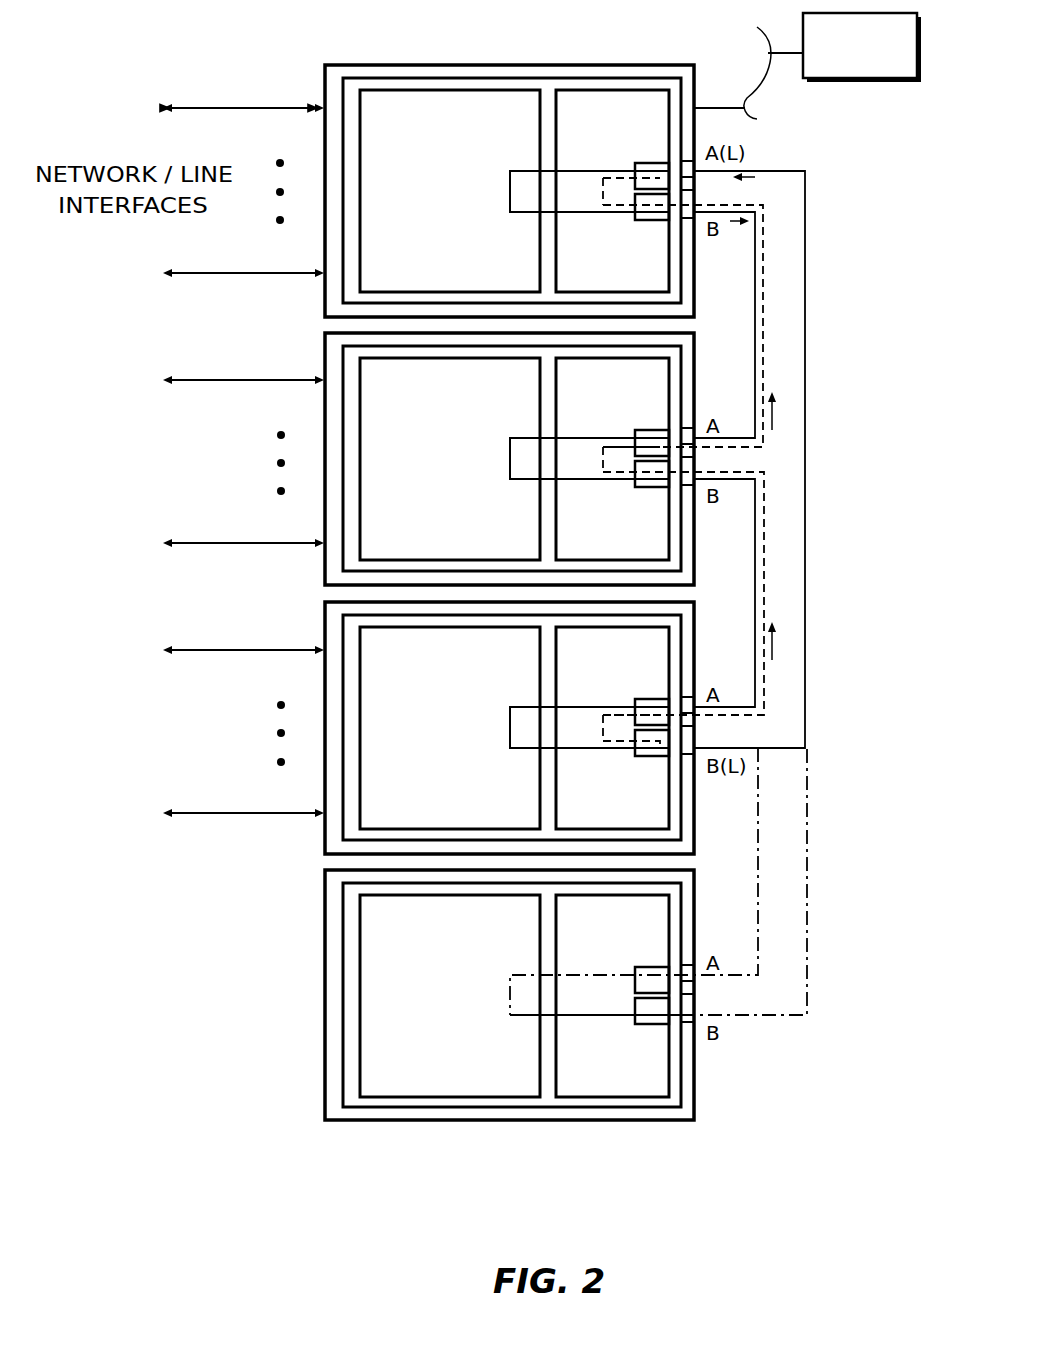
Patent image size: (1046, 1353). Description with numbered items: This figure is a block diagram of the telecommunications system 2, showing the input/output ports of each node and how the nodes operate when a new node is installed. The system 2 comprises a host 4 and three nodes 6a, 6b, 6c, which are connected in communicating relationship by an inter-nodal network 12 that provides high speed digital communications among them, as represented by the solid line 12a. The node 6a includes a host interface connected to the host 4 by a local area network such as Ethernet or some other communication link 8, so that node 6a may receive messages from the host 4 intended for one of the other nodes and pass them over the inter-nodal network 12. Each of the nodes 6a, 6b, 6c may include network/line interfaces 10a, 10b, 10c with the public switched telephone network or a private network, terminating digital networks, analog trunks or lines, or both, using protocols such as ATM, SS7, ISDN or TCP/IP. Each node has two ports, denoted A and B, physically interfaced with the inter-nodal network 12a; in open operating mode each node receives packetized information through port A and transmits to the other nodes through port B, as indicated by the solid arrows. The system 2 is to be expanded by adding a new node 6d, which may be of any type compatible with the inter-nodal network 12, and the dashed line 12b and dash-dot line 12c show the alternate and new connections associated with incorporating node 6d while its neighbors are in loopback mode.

The telecommunications system 2 is at (896, 630).
The host 4 is at (858, 83).
The node 6a is at (694, 84).
The node 6b is at (694, 361).
The node 6c is at (694, 622).
The new node 6d is at (694, 890).
The communication link 8 is at (745, 108).
The network/line interface 10a is at (208, 106).
The network/line interface 10b is at (208, 377).
The network/line interface 10c is at (208, 647).
The inter-nodal network 12 is at (861, 455).
The inter-nodal network solid line 12a is at (805, 316).
The interconnect link B 12b is at (763, 259).
The interconnect link C 12c is at (807, 995).